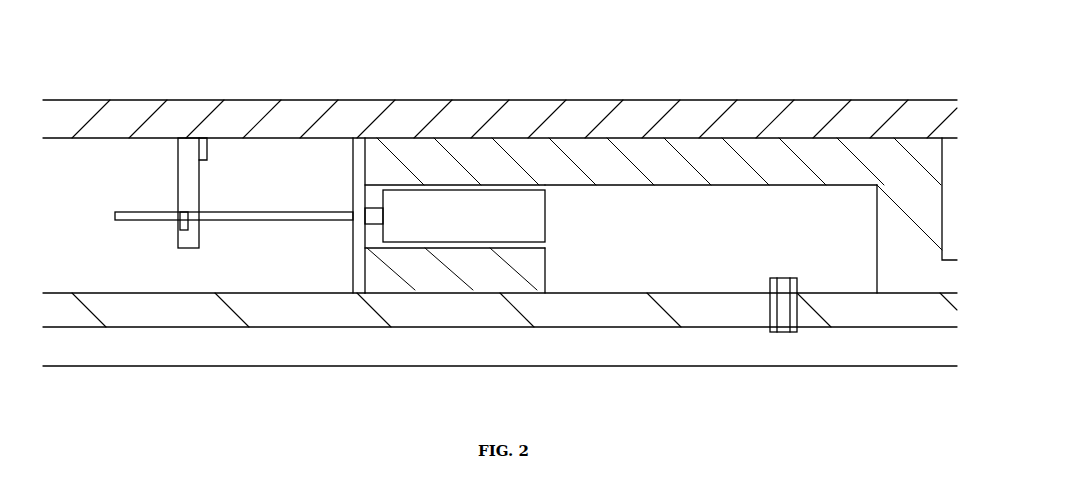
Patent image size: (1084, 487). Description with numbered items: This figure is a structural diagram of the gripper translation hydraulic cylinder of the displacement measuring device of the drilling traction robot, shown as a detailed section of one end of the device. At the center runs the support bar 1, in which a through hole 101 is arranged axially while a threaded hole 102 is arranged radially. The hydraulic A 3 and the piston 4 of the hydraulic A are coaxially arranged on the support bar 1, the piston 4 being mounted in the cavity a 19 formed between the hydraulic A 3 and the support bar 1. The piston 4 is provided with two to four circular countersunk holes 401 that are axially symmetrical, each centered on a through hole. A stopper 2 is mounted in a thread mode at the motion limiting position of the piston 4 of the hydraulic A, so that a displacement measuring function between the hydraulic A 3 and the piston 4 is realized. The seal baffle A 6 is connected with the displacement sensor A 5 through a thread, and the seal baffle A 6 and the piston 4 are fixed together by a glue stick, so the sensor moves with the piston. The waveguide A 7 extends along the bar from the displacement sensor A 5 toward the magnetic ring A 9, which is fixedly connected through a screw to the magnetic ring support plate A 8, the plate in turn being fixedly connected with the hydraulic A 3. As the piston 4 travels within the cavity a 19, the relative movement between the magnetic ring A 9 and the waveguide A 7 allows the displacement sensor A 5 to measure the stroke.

The support bar 1 is at (500, 347).
The through hole 101 is at (500, 374).
The threaded hole 102 is at (752, 340).
The stopper 2 is at (827, 170).
The hydraulic A 3 is at (500, 73).
The piston of the hydraulic A 4 is at (500, 134).
The circular countersunk hole 401 is at (711, 293).
The displacement sensor A 5 is at (464, 125).
The seal baffle A 6 is at (449, 151).
The waveguide A 7 is at (234, 114).
The magnetic ring support plate A 8 is at (219, 128).
The magnetic ring A 9 is at (147, 119).
The cavity a 19 is at (204, 335).